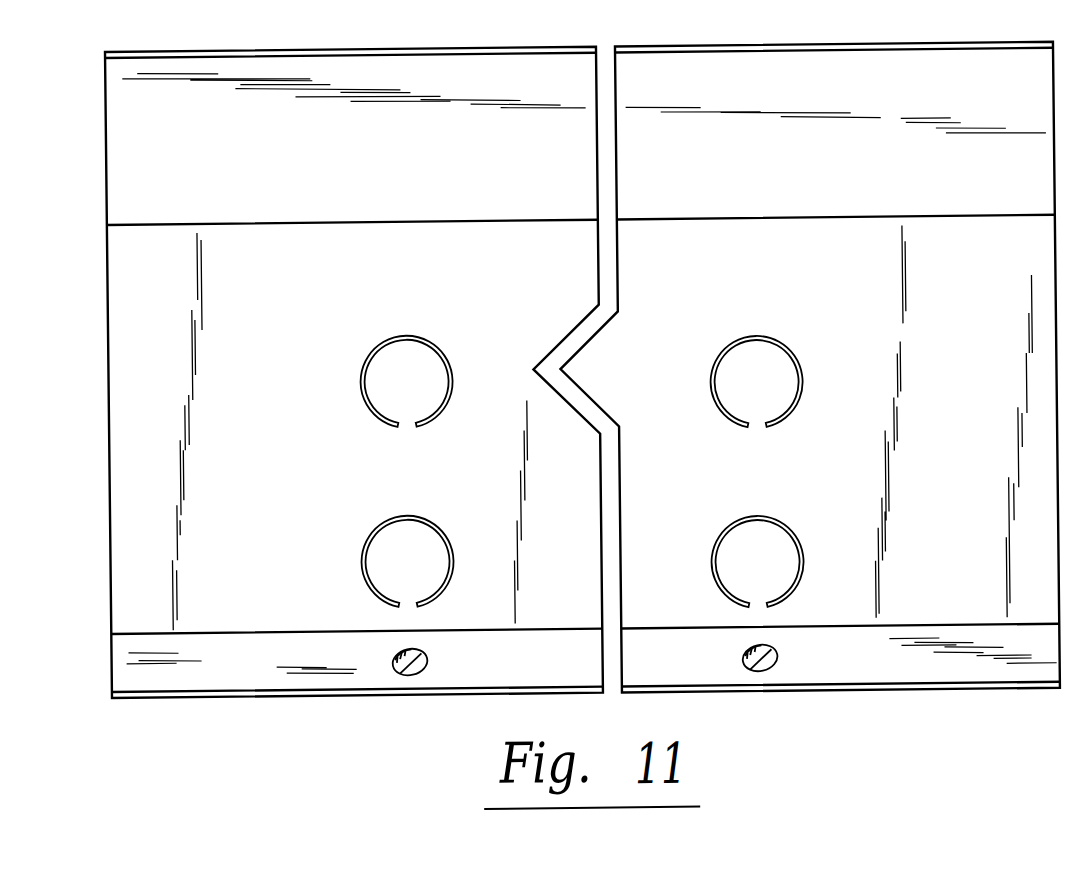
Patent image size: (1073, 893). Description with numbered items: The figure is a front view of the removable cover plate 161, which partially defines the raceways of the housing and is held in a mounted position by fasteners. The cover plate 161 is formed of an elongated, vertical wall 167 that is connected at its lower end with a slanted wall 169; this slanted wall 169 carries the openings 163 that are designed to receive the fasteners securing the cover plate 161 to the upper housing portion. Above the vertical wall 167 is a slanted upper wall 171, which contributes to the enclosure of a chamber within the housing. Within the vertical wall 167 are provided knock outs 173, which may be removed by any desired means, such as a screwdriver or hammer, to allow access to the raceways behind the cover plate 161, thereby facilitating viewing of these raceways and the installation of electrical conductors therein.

The removable cover plate 161 is at (90, 505).
The openings 163 is at (422, 662).
The elongated vertical wall 167 is at (286, 294).
The slanted wall 169 is at (250, 682).
The slanted upper wall 171 is at (369, 158).
The knock outs 173 is at (775, 590).